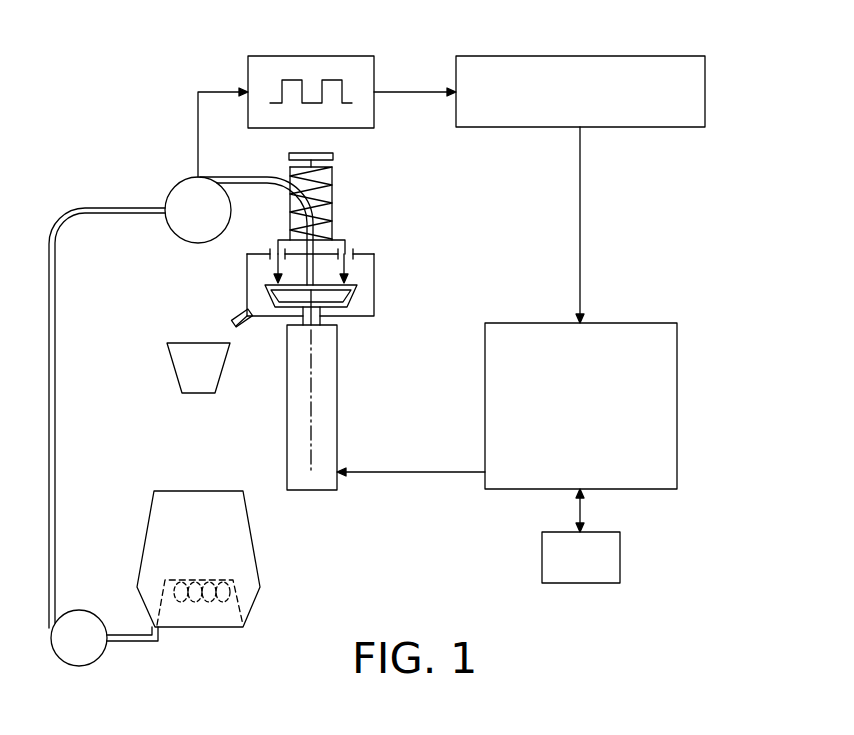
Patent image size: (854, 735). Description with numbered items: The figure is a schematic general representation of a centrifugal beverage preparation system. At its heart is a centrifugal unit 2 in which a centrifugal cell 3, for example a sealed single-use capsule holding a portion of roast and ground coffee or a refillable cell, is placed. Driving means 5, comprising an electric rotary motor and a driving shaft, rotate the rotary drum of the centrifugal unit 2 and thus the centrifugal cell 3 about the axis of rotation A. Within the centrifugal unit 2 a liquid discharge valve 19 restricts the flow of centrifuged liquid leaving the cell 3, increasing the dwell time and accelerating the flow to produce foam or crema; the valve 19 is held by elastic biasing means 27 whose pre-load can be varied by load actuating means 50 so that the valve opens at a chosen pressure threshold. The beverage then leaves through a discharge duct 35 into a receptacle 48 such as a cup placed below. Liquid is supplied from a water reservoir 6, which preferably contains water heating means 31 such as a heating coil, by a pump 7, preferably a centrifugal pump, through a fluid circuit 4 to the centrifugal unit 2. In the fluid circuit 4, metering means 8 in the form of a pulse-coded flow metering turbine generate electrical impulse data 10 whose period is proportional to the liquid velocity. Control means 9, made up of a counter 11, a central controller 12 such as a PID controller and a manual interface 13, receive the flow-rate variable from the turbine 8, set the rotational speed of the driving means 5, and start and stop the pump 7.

The centrifugal unit 2 is at (366, 316).
The centrifugal cell 3 is at (366, 300).
The fluid circuit 4 is at (98, 208).
The driving means 5 is at (311, 490).
The water reservoir 6 is at (262, 587).
The pump 7 is at (78, 666).
The metering means 8 is at (178, 181).
The control means 9 is at (714, 167).
The electrical impulse data 10 is at (268, 56).
The counter 11 is at (706, 65).
The central controller 12 is at (678, 335).
The manual interface 13 is at (621, 544).
The liquid discharge valve 19 is at (350, 262).
The elastic biasing means 27 is at (334, 192).
The water heating means 31 is at (160, 607).
The discharge duct 35 is at (232, 312).
The receptacle 48 is at (165, 360).
The load actuating means 50 is at (346, 157).
The axis of rotation A is at (312, 404).